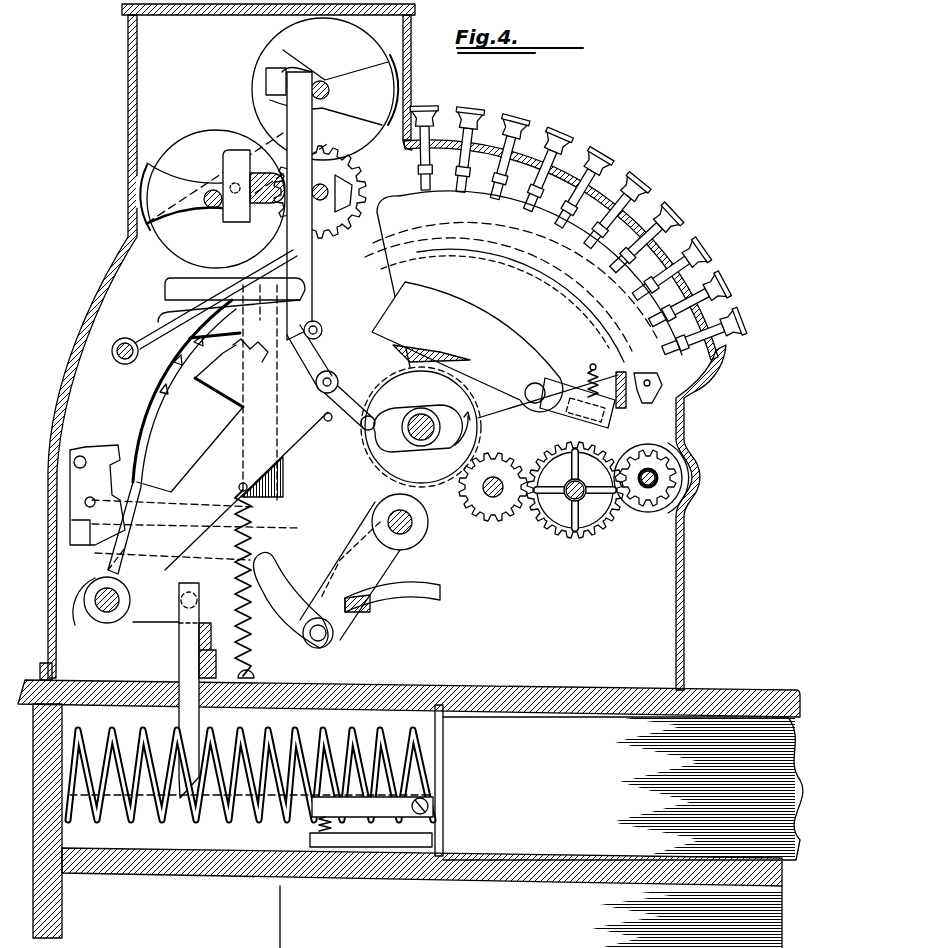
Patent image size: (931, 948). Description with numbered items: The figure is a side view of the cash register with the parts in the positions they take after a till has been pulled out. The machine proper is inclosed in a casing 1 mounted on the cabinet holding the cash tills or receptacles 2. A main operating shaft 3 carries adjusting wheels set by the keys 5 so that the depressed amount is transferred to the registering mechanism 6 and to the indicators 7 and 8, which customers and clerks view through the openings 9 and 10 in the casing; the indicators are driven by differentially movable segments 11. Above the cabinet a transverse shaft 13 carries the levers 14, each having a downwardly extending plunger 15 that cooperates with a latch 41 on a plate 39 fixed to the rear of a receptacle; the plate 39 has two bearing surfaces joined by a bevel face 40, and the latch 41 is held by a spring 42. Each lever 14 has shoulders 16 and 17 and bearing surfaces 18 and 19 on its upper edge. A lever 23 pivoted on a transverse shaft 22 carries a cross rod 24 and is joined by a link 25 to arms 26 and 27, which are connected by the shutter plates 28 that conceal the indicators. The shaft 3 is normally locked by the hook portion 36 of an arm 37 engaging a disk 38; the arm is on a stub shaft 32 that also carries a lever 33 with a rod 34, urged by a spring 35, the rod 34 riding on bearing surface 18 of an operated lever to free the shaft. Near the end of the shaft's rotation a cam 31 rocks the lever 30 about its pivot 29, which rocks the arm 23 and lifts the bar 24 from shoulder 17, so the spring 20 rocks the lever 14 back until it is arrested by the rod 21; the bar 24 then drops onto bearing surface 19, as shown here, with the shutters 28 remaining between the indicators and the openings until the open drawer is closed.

The casing 1 is at (95, 318).
The cash tills or receptacles 2 is at (541, 832).
The main operating shaft 3 is at (425, 417).
The keys 5 is at (490, 118).
The registering mechanism 6 is at (655, 500).
The indicator 7 is at (172, 258).
The indicator 8 is at (255, 66).
The opening 9 is at (128, 204).
The opening 10 is at (411, 97).
The differentially movable segments 11 is at (523, 279).
The transverse shaft 13 is at (100, 626).
The lever 14 is at (212, 455).
The plunger 15 is at (179, 662).
The shoulder 16 is at (306, 356).
The shoulder 17 is at (336, 363).
The bearing surface 18 is at (229, 345).
The bearing surface 19 is at (298, 343).
The spring 20 is at (258, 650).
The rod 21 is at (326, 422).
The transverse shaft 22 is at (117, 363).
The lever 23 is at (140, 320).
The cross rod 24 is at (320, 298).
The link 25 is at (352, 195).
The arm 26 is at (254, 197).
The arm 27 is at (319, 64).
The plates (shutters) 28 is at (152, 160).
The pivot 29 is at (342, 392).
The lever 30 is at (365, 440).
The cam 31 is at (410, 436).
The stub shaft 32 is at (540, 405).
The lever 33 is at (412, 290).
The rod 34 is at (210, 392).
The spring 35 is at (590, 370).
The hook portion 36 is at (398, 356).
The arm 37 is at (512, 395).
The disk 38 is at (428, 505).
The plate 39 is at (368, 845).
The bevel face 40 is at (400, 806).
The latch 41 is at (336, 818).
The spring 42 is at (333, 827).